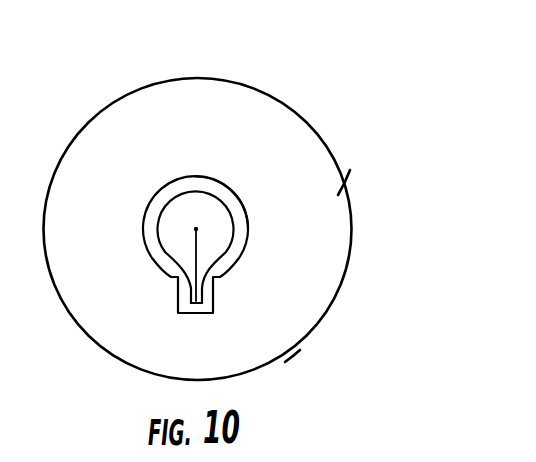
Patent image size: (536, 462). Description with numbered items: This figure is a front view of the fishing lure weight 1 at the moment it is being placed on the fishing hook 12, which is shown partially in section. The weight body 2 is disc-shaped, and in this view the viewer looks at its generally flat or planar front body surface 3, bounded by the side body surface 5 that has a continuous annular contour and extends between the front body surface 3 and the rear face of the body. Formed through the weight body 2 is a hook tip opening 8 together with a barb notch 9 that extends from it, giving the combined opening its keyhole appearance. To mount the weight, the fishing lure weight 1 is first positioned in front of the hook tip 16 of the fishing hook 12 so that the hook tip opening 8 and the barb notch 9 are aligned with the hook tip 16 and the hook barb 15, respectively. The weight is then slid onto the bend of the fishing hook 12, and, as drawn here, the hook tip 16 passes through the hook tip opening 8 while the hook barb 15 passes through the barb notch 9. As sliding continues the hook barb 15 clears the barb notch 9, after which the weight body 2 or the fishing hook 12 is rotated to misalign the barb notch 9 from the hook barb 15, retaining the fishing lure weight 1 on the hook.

The fishing lure weight 1 is at (140, 63).
The weight body 2 is at (301, 112).
The front body surface 3 is at (270, 340).
The side body surface 5 is at (343, 187).
The hook tip opening 8 is at (150, 243).
The barb notch 9 is at (178, 312).
The fishing hook 12 is at (197, 188).
The hook barb 15 is at (203, 303).
The hook tip 16 is at (198, 228).